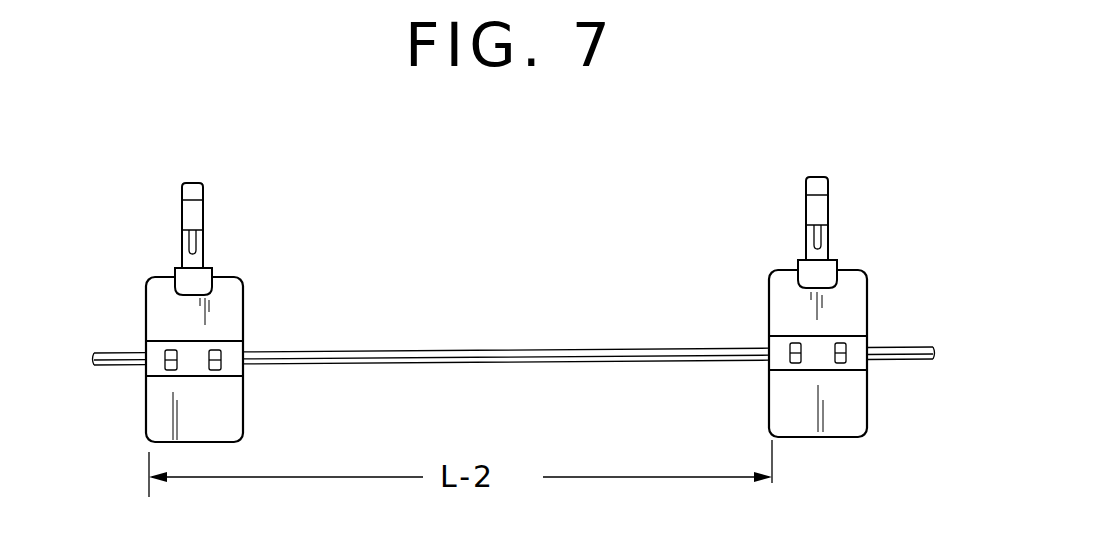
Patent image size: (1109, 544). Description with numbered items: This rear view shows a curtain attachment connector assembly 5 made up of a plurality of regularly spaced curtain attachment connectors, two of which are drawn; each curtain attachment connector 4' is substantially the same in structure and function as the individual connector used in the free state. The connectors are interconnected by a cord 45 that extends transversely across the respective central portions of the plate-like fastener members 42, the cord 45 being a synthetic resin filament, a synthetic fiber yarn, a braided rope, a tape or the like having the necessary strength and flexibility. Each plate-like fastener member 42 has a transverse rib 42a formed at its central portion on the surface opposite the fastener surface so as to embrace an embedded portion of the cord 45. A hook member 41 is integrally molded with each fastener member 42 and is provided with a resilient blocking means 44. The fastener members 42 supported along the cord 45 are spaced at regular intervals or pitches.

The curtain attachment connector 4' is at (501, 309).
The curtain attachment connector assembly 5 is at (140, 272).
The hook member 41 is at (197, 212).
The plate-like fastener member 42 is at (243, 313).
The transverse rib 42a is at (155, 367).
The blocking means 44 is at (207, 248).
The cord 45 is at (573, 348).